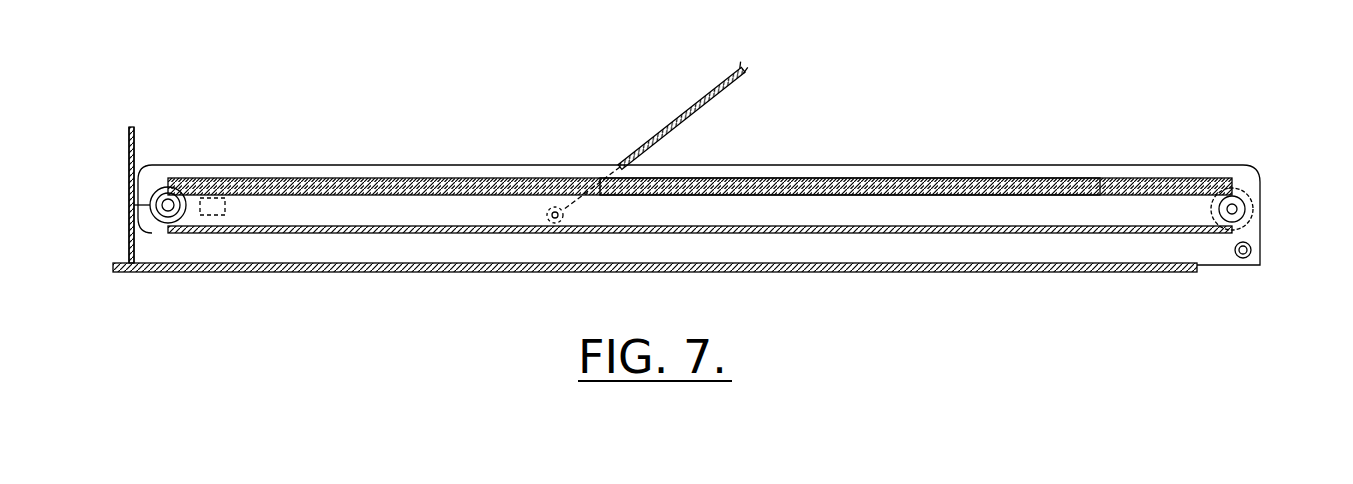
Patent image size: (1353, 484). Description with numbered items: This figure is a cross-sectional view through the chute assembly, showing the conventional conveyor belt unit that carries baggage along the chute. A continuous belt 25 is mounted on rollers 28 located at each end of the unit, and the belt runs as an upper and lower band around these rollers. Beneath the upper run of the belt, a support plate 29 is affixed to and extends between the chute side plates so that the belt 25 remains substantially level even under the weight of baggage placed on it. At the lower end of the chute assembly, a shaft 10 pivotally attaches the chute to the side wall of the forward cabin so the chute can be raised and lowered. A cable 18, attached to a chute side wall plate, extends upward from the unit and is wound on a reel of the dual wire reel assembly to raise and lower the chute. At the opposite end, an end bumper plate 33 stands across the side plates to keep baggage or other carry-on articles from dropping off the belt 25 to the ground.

The shaft 10 is at (1258, 251).
The cable 18 is at (700, 102).
The continuous belt 25 is at (1018, 178).
The rollers 28 is at (1213, 184).
The support plate 29 is at (855, 178).
The end bumper plate 33 is at (132, 138).